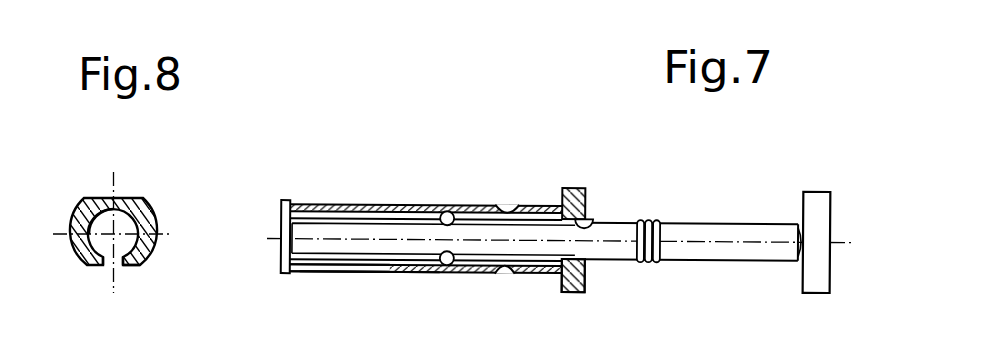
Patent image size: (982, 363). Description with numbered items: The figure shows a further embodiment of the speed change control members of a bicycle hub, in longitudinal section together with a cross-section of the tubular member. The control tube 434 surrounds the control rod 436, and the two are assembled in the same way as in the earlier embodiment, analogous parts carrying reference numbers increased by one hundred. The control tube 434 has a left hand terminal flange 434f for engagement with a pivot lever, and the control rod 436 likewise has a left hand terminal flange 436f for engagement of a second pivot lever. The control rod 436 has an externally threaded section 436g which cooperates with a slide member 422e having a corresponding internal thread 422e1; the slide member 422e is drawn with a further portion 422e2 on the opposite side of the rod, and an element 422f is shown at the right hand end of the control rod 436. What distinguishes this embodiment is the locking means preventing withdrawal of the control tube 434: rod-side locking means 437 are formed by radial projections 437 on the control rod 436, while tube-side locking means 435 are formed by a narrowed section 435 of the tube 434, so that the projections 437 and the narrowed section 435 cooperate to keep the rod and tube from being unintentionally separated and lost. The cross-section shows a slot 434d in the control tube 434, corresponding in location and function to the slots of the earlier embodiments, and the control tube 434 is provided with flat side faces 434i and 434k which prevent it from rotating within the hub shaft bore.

In FIG. 8, the control tube 434 is at (78, 213).
In FIG. 7, the control tube 434 is at (473, 268).
In FIG. 8, the flat side face 434i is at (120, 198).
In FIG. 8, the slot 434d is at (108, 262).
In FIG. 7, the slot 434d is at (372, 268).
In FIG. 8, the flat side face 434k is at (137, 267).
In FIG. 7, the left hand terminal flange 434f is at (288, 266).
In FIG. 7, the control rod 436 is at (726, 253).
In FIG. 7, the left hand terminal flange 436f is at (290, 228).
In FIG. 7, the externally threaded section 436g is at (655, 218).
In FIG. 7, the rod-side locking means 437 is at (446, 207).
In FIG. 7, the tube-side locking means 435 is at (508, 206).
In FIG. 7, the slide member 422e is at (568, 188).
In FIG. 7, the internal thread 422e1 is at (590, 222).
In FIG. 7, the lower part of flange 422e2 is at (572, 292).
In FIG. 7, the head 422f is at (821, 193).